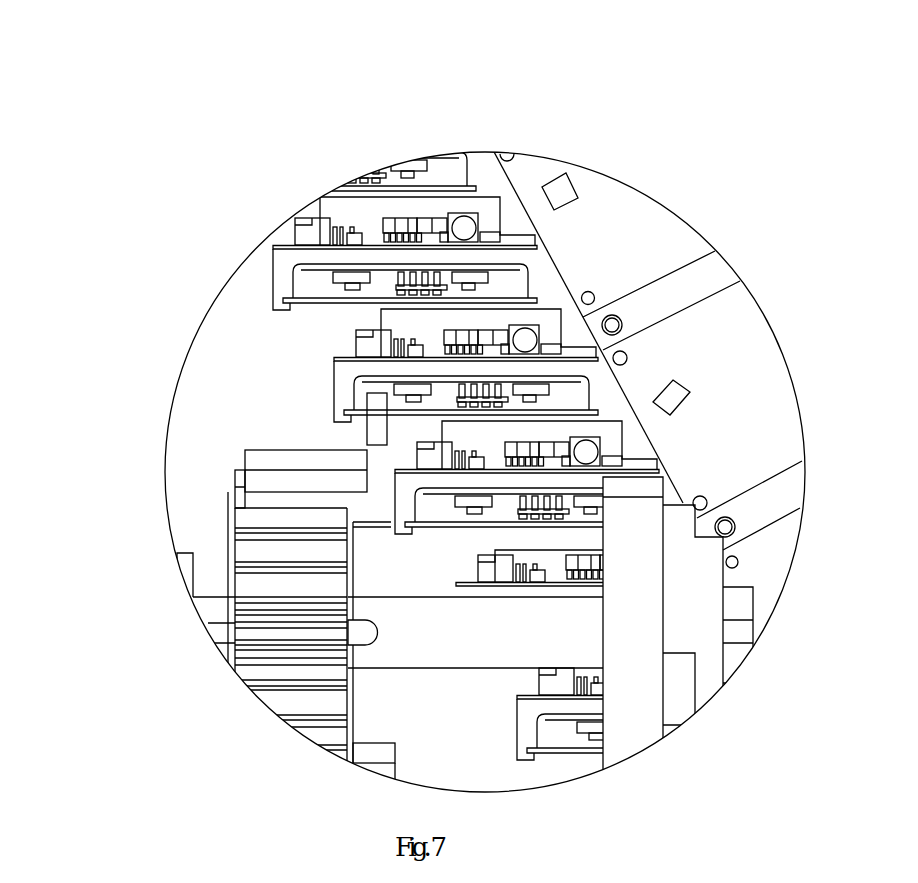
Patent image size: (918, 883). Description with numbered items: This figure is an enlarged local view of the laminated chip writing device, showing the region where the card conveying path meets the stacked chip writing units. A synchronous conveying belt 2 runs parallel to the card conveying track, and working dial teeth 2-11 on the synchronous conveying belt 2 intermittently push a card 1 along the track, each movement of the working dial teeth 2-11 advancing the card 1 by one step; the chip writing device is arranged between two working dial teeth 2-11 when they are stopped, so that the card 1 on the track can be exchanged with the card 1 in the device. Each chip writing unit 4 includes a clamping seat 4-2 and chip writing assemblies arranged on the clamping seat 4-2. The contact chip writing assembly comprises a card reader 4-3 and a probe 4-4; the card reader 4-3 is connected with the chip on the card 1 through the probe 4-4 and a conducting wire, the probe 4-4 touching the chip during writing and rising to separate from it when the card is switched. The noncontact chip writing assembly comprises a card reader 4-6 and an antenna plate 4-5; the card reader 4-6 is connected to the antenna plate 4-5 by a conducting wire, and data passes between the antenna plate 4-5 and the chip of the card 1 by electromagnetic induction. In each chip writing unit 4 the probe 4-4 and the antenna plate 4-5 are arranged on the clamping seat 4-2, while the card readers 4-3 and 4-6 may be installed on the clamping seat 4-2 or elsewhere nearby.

The card 1 is at (493, 297).
The synchronous conveying belt 2 is at (275, 553).
The working dial teeth 2-11 is at (375, 447).
The chip writing unit 4 is at (415, 392).
The clamping seat 4-2 is at (122, 688).
The card reader 4-3 is at (380, 245).
The probe 4-4 is at (437, 277).
The antenna plate 4-5 is at (328, 268).
The card reader 4-6 is at (593, 203).